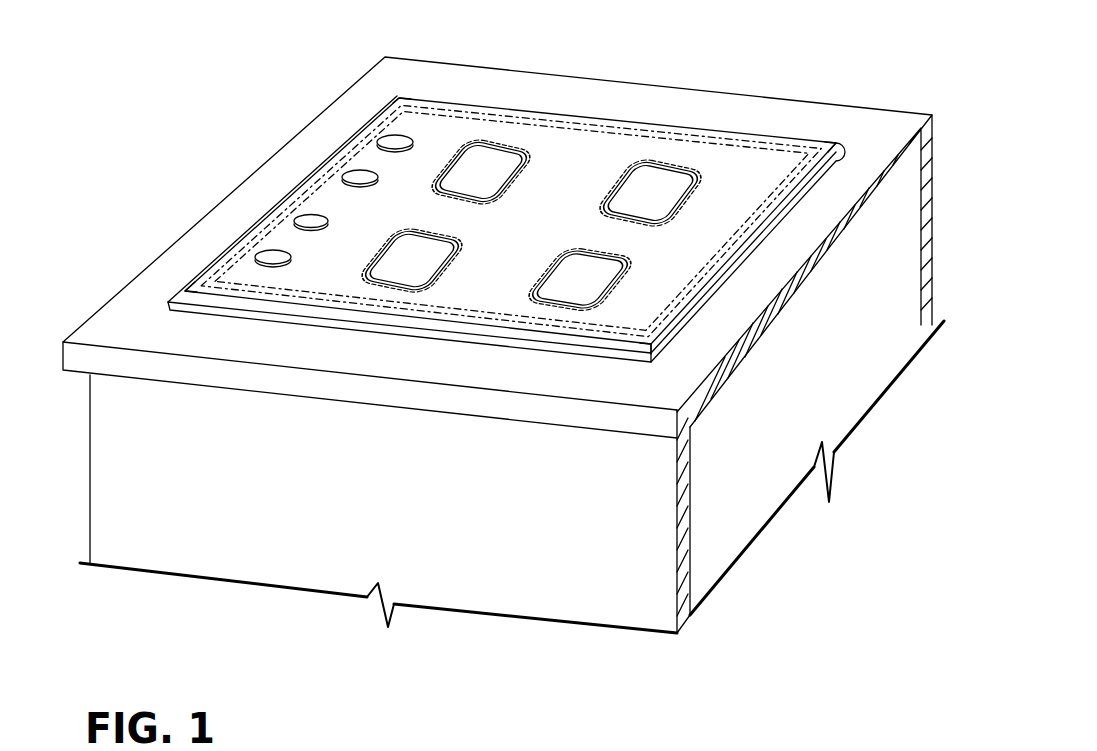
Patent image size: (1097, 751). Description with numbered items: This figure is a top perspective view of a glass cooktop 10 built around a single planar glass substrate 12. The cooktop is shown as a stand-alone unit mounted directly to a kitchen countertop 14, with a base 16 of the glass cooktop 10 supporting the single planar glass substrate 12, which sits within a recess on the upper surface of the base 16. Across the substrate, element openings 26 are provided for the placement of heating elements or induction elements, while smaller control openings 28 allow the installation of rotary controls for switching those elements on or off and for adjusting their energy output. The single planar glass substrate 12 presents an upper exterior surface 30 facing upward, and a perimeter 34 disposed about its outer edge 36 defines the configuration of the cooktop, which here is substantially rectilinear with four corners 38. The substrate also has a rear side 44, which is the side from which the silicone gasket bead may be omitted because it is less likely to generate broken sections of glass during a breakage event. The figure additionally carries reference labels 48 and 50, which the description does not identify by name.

The glass cooktop 10 is at (753, 120).
The single planar glass substrate 12 is at (693, 245).
The kitchen countertop 14 is at (490, 88).
The base 16 is at (287, 190).
The element openings 26 is at (516, 146).
The control openings 28 is at (360, 170).
The upper exterior surface 30 is at (653, 317).
The perimeter 34 is at (283, 322).
The outer edge 36 is at (780, 137).
The corners 38 is at (398, 96).
The rear side 44 is at (597, 118).
The plate side face 48 is at (710, 280).
The bevel edge 50 is at (310, 172).